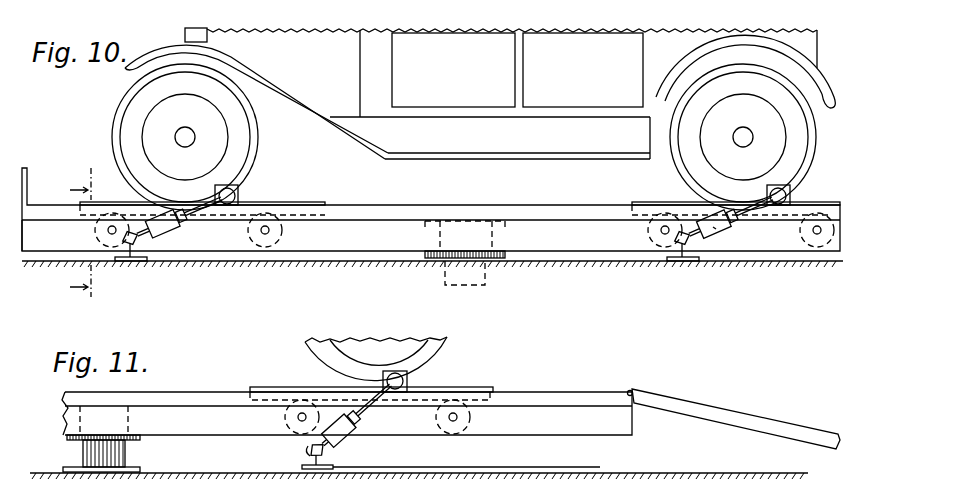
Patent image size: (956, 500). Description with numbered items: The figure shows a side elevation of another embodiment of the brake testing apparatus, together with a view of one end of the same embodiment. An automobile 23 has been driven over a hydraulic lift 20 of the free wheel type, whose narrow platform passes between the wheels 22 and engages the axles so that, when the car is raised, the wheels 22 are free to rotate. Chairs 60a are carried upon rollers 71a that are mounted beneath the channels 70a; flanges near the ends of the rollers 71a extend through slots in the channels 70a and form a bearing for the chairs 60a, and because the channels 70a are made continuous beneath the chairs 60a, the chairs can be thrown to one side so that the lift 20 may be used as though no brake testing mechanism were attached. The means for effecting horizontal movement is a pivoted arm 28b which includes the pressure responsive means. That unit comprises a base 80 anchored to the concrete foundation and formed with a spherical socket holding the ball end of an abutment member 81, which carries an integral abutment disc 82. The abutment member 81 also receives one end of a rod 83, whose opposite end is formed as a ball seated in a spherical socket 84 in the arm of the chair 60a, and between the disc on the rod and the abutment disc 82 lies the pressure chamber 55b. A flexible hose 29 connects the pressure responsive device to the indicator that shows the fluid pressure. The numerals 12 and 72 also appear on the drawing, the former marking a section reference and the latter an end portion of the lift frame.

In FIG. 10, the section line 12 is at (70, 232).
In FIG. 10, the hydraulic lift 20 is at (486, 283).
In FIG. 11, the hydraulic lift 20 is at (83, 448).
In FIG. 10, the wheels 22 is at (130, 123).
In FIG. 11, the wheels 22 is at (437, 338).
In FIG. 10, the automobile 23 is at (480, 93).
In FIG. 10, the pivoted arm 28b is at (731, 233).
In FIG. 11, the pivoted arm 28b is at (352, 439).
In FIG. 11, the flexible hose 29 is at (310, 448).
In FIG. 10, the pressure chamber 55b is at (170, 248).
In FIG. 10, the chairs 60a is at (305, 201).
In FIG. 11, the chairs 60a is at (490, 387).
In FIG. 10, the channels 70a is at (433, 203).
In FIG. 11, the channels 70a is at (192, 401).
In FIG. 10, the rollers 71a is at (110, 212).
In FIG. 11, the rollers 71a is at (285, 417).
In FIG. 10, the platform end member 72 is at (372, 240).
In FIG. 11, the platform end member 72 is at (628, 436).
In FIG. 10, the base 80 is at (132, 259).
In FIG. 11, the base 80 is at (312, 467).
In FIG. 10, the abutment member 81 is at (157, 241).
In FIG. 11, the abutment disc 82 is at (348, 444).
In FIG. 10, the rod 83 is at (198, 217).
In FIG. 10, the spherical socket 84 is at (237, 190).
In FIG. 11, the spherical socket 84 is at (407, 379).